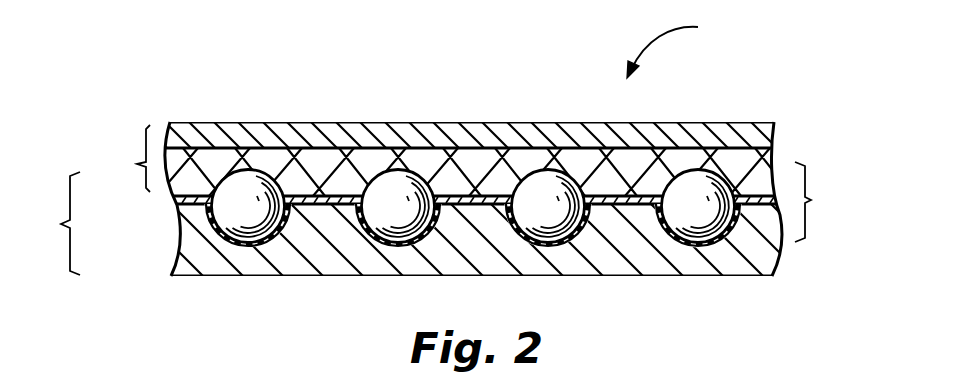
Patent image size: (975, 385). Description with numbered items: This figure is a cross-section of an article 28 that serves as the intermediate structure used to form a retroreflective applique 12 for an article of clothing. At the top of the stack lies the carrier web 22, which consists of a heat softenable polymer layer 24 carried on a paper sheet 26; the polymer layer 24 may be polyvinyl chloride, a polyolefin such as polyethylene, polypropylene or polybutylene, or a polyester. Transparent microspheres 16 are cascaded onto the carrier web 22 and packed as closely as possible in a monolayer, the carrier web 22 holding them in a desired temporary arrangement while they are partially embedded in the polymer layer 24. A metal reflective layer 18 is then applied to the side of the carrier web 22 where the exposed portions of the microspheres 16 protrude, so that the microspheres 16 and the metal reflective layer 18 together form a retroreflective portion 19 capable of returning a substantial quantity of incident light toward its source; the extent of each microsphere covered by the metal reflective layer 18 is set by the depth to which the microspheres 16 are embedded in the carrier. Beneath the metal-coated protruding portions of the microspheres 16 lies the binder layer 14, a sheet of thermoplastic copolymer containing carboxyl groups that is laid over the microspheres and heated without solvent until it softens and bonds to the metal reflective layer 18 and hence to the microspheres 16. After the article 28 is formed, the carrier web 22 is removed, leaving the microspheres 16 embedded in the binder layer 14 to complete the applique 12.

The retroreflective applique 12 is at (56, 223).
The binder layer 14 is at (196, 232).
The microspheres 16 is at (364, 196).
The metal reflective layer 18 is at (484, 196).
The retroreflective portion 19 is at (820, 202).
The carrier web 22 is at (124, 158).
The heat softenable polymer layer 24 is at (775, 163).
The paper sheet 26 is at (203, 122).
The article 28 is at (677, 46).